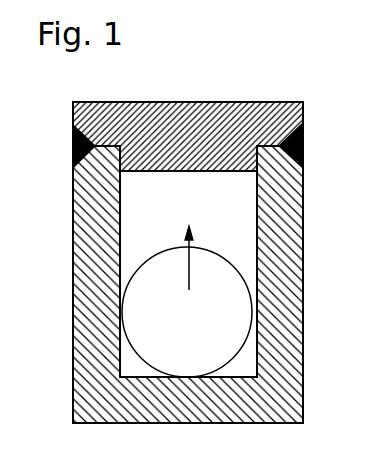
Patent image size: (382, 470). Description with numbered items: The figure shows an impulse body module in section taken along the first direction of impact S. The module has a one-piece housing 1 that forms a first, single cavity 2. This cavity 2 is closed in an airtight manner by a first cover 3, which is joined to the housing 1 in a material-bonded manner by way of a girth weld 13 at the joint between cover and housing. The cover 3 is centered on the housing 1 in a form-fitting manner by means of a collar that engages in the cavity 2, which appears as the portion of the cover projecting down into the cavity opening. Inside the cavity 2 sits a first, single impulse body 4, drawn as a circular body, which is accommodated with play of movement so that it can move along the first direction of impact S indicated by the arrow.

The housing 1 is at (303, 297).
The cavity 2 is at (156, 213).
The cover 3 is at (303, 107).
The impulse body 4 is at (225, 341).
The girth weld 13 is at (303, 145).
The first direction of impact S is at (193, 248).